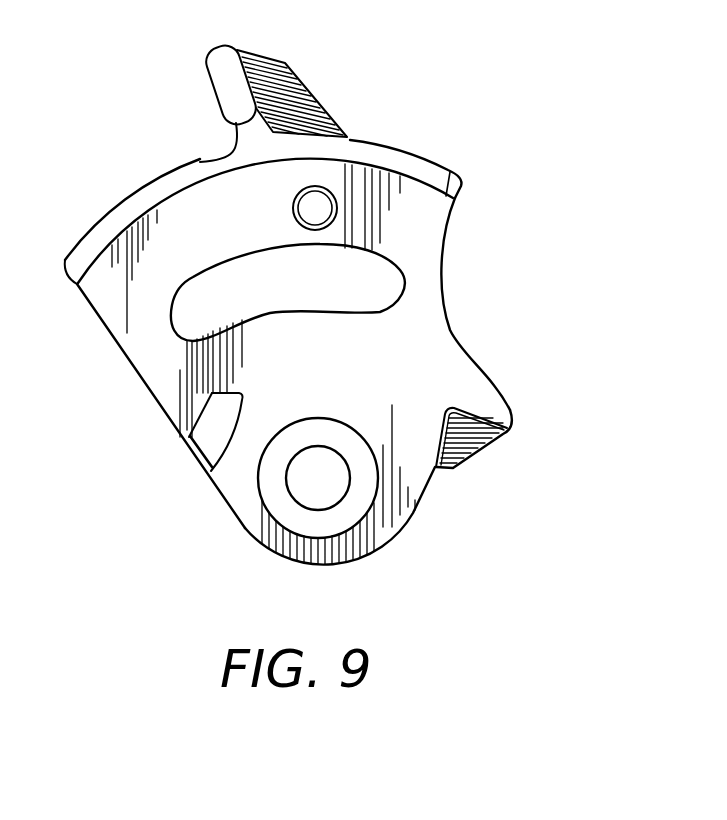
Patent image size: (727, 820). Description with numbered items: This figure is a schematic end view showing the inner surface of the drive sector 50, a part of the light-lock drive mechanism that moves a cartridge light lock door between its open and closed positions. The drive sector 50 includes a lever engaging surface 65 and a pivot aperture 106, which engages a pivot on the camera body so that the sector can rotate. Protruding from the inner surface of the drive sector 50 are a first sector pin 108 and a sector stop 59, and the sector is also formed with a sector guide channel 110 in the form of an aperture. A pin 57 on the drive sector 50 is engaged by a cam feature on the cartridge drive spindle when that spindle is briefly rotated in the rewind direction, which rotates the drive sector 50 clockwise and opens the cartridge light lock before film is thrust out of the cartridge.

The drive sector 50 is at (175, 233).
The pin 57 is at (506, 436).
The sector stop 59 is at (206, 423).
The lever engaging surface 65 is at (210, 58).
The pivot aperture 106 is at (305, 493).
The first sector pin 108 is at (317, 204).
The sector guide channel 110 is at (397, 291).